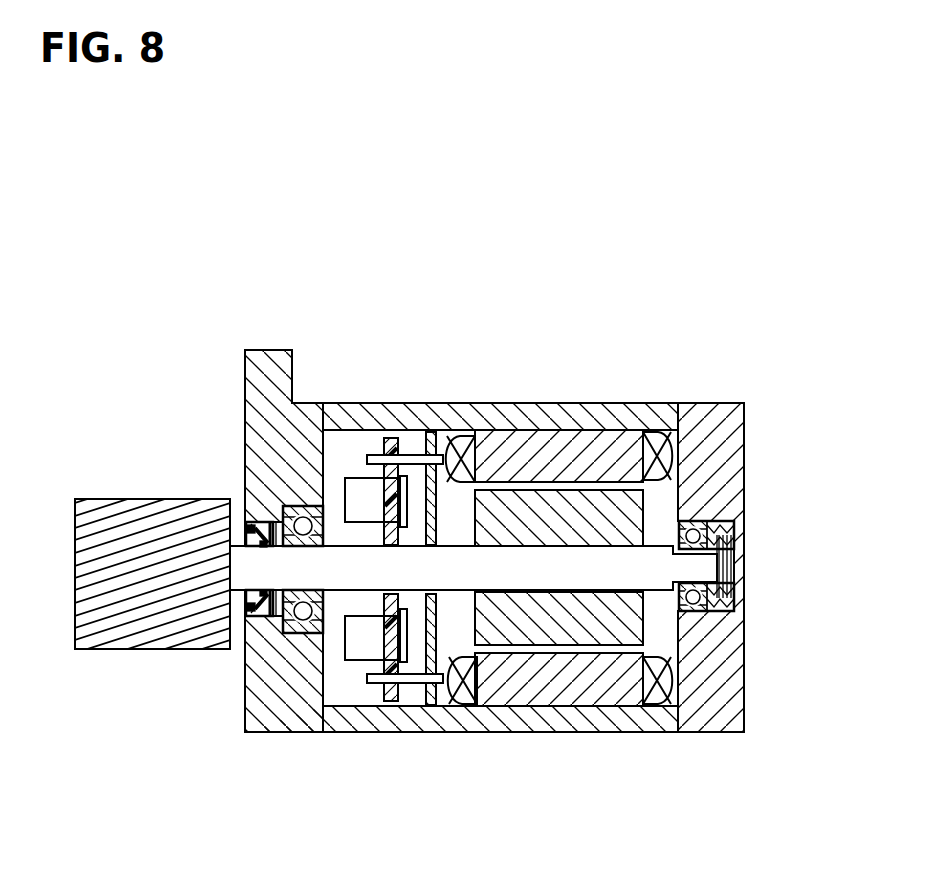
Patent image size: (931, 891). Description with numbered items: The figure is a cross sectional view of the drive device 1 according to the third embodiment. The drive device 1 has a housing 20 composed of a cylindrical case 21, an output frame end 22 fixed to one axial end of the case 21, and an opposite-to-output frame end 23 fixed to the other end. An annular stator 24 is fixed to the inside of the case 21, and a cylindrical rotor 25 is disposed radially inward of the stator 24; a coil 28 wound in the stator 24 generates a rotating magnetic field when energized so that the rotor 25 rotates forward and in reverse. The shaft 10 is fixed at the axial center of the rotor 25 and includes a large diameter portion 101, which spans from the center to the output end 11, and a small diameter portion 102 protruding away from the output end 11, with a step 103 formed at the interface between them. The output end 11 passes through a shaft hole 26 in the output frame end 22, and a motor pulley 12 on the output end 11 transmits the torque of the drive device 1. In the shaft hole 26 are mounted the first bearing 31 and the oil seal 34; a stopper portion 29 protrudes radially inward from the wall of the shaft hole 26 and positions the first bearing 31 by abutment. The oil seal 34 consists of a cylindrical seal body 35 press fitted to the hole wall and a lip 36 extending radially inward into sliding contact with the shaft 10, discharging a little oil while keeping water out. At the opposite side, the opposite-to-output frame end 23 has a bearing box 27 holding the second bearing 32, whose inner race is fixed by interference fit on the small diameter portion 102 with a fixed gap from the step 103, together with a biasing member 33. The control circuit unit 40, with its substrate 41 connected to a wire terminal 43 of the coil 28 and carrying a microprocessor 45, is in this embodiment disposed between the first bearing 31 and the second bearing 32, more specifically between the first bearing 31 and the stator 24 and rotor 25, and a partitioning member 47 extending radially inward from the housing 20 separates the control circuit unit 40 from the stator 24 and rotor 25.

The drive device 1 is at (329, 256).
The shaft 10 is at (543, 450).
The large diameter portion 101 is at (502, 575).
The small diameter portion 102 is at (694, 565).
The step 103 is at (709, 551).
The output end 11 is at (242, 580).
The motor pulley 12 is at (96, 566).
The housing 20 is at (687, 826).
The case 21 is at (514, 722).
The output frame end 22 is at (310, 686).
The opposite-to-output frame end 23 is at (720, 680).
The stator 24 is at (599, 455).
The rotor 25 is at (557, 500).
The shaft hole 26 is at (276, 521).
The bearing box 27 is at (673, 428).
The coil 28 is at (679, 521).
The stopper portion 29 is at (271, 632).
The first bearing 31 is at (299, 506).
The second bearing 32 is at (711, 539).
The biasing member 33 is at (727, 609).
The oil seal 34 is at (227, 357).
The seal body 35 is at (250, 531).
The lip 36 is at (246, 538).
The control circuit unit 40 is at (355, 454).
The substrate 41 is at (386, 438).
The wire terminal 43 is at (412, 456).
The microprocessor 45 is at (459, 440).
The partitioning member 47 is at (428, 446).